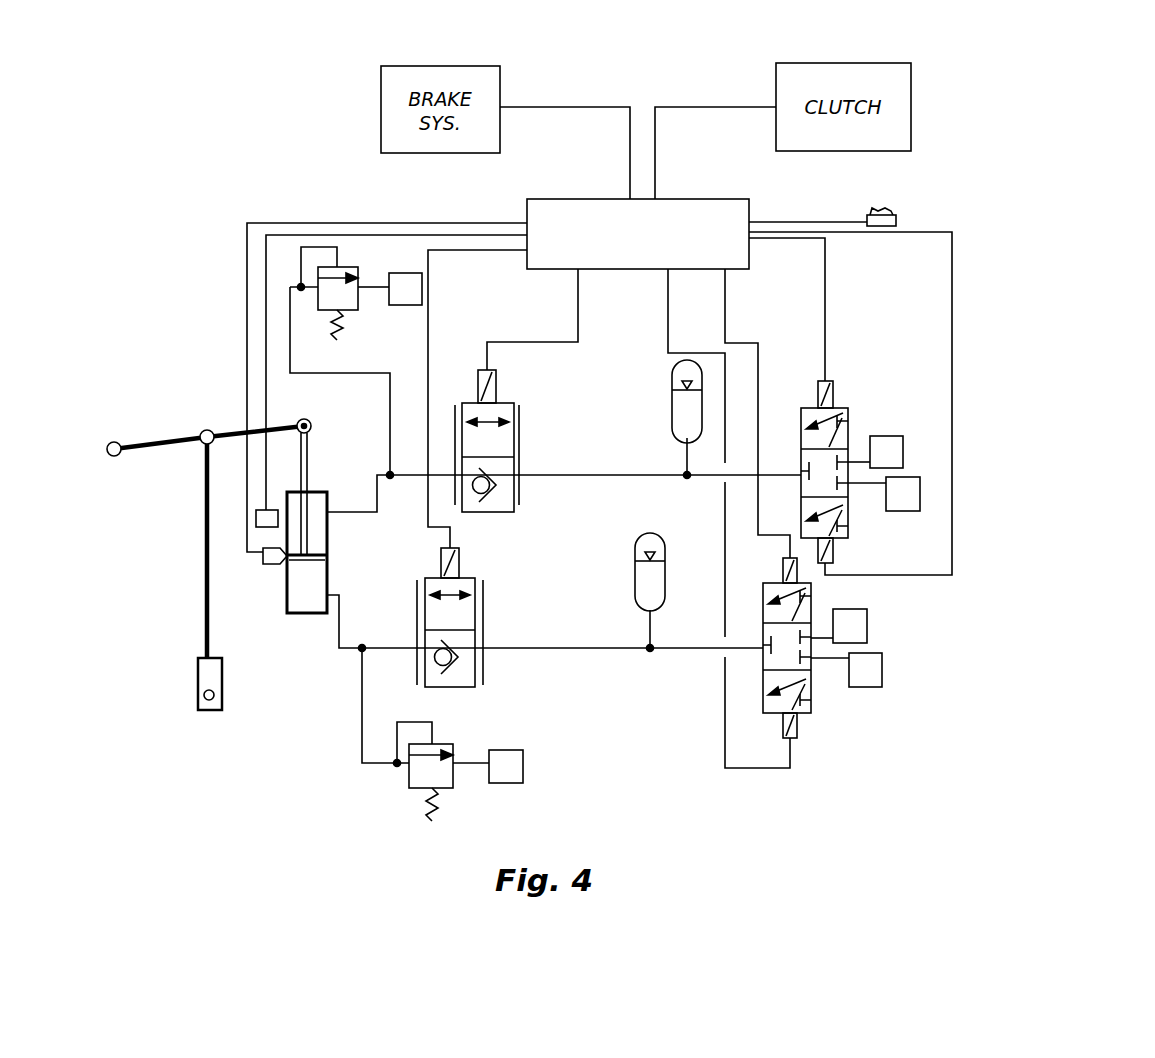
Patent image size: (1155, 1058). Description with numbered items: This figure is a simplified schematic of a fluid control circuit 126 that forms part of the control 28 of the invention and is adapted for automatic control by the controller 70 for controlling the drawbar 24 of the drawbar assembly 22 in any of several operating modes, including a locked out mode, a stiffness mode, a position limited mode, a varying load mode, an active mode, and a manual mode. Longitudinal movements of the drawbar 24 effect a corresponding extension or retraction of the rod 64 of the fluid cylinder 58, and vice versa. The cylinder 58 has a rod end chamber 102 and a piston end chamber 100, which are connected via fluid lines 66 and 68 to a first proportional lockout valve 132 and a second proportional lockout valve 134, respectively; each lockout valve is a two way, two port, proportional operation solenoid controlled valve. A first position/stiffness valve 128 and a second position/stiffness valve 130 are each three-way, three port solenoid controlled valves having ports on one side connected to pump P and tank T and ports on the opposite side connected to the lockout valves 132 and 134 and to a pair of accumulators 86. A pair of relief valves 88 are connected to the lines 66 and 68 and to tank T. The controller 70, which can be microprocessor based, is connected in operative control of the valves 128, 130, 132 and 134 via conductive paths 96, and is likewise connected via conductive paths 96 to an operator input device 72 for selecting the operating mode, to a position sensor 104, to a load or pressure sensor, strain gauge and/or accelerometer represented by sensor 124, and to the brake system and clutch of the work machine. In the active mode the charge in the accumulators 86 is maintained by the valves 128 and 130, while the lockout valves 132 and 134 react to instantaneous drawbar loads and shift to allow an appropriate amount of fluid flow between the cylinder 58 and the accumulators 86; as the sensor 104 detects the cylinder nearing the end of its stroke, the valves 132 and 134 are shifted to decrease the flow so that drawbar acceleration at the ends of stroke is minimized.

The drawbar assembly 22 is at (144, 440).
The drawbar 24 is at (198, 690).
The control 28 is at (823, 757).
The fluid cylinder 58 is at (287, 606).
The rod 64 is at (311, 429).
The fluid line 66 is at (378, 500).
The fluid line 68 is at (385, 648).
The controller 70 is at (572, 199).
The input device 72 is at (896, 220).
The accumulators 86 is at (672, 410).
The relief valves 88 is at (360, 312).
The conductive paths 96 is at (565, 107).
The piston end chamber 100 is at (313, 606).
The rod end chamber 102 is at (322, 493).
The position sensor 104 is at (270, 565).
The sensor 124 is at (256, 518).
The fluid control circuit 126 is at (1015, 188).
The first position/stiffness valve 128 is at (848, 412).
The second position/stiffness valve 130 is at (811, 704).
The first proportional lockout valve 132 is at (514, 405).
The second proportional lockout valve 134 is at (475, 582).